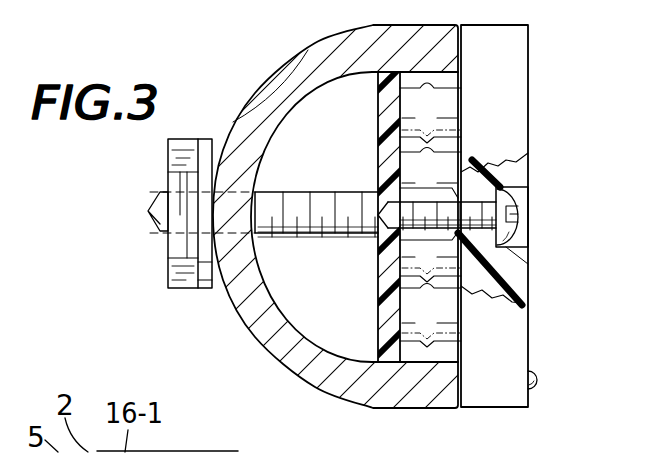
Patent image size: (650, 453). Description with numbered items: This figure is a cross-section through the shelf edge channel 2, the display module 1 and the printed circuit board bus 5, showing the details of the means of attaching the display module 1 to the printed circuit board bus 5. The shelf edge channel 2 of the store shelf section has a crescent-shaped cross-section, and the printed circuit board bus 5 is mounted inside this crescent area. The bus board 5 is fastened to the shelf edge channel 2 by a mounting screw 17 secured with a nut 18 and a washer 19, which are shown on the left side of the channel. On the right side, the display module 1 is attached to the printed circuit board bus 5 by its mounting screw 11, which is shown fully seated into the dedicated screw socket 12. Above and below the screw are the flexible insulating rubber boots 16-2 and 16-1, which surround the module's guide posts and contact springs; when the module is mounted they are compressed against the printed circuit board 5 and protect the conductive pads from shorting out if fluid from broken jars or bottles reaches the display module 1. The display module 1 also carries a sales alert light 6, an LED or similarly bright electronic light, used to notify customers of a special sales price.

The display module 1 is at (518, 344).
The shelf edge channel 2 is at (365, 395).
The printed circuit board bus 5 is at (377, 298).
The sales alert light 6 is at (531, 392).
The mounting screw 11 is at (519, 231).
The screw socket 12 is at (452, 193).
The rubber boot 16-1 is at (450, 331).
The rubber boot 16-2 is at (445, 102).
The mounting screw 17 is at (150, 209).
The nut 18 is at (178, 290).
The washer 19 is at (204, 290).